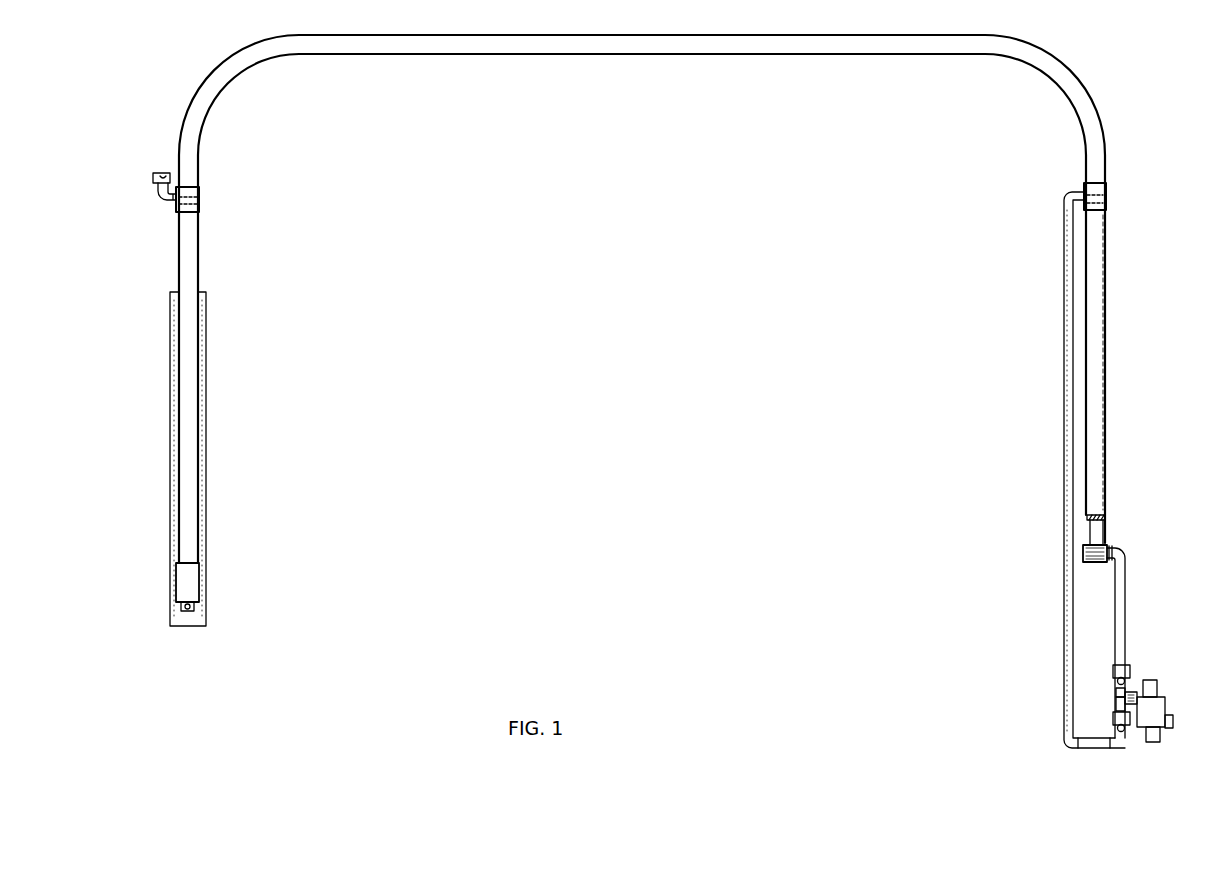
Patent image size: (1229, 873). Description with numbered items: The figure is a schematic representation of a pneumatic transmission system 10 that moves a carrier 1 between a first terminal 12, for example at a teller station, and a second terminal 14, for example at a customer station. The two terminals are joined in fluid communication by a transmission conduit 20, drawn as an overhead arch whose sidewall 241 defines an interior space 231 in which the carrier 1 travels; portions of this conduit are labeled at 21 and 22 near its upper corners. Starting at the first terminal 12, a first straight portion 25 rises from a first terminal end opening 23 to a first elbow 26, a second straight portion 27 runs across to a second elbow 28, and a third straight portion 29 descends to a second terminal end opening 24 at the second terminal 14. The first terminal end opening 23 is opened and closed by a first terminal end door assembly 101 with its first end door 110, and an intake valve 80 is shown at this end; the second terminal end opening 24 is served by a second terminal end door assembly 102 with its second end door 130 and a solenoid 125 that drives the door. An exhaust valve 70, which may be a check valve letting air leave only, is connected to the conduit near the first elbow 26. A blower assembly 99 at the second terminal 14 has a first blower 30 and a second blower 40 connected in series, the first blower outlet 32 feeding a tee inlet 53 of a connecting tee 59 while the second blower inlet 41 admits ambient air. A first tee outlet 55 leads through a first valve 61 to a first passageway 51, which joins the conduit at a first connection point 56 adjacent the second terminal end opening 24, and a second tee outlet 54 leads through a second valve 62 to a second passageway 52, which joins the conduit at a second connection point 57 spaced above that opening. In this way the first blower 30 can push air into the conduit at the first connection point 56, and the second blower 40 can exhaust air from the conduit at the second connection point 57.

The pneumatic transmission system 10 is at (186, 62).
The first terminal 12 is at (228, 382).
The second terminal 14 is at (1118, 478).
The carrier 1 is at (1097, 533).
The transmission conduit 20 is at (708, 53).
The left vertical section 21 is at (178, 145).
The right vertical section 22 is at (1103, 144).
The first terminal end opening 23 is at (170, 606).
The second terminal end opening 24 is at (1080, 576).
The first straight portion 25 is at (178, 327).
The first elbow 26 is at (228, 88).
The second straight portion 27 is at (525, 53).
The second elbow 28 is at (1055, 90).
The third straight portion 29 is at (1105, 352).
The first blower 30 is at (1165, 707).
The outlet of the first blower 32 is at (1143, 695).
The second blower 40 is at (1173, 718).
The inlet of the second blower 41 is at (1167, 727).
The first passageway 51 is at (1122, 577).
The second passageway 52 is at (1070, 622).
The tee inlet 53 is at (1128, 695).
The second tee outlet 54 is at (1115, 720).
The first tee outlet 55 is at (1115, 692).
The first connection point 56 is at (1118, 541).
The second connection point 57 is at (1073, 182).
The connecting tee 59 is at (1120, 698).
The first valve 61 is at (1115, 673).
The second valve 62 is at (1123, 730).
The exhaust valve 70 is at (152, 177).
The intake valve 80 is at (180, 610).
The blower assembly 99 is at (1110, 763).
The first terminal end door assembly 101 is at (207, 598).
The second terminal end door assembly 102 is at (1074, 551).
The first end door 110 is at (193, 608).
The solenoid 125 is at (1085, 558).
The second end door 130 is at (1103, 562).
The interior space 231 is at (1096, 247).
The sidewall 241 is at (1109, 296).